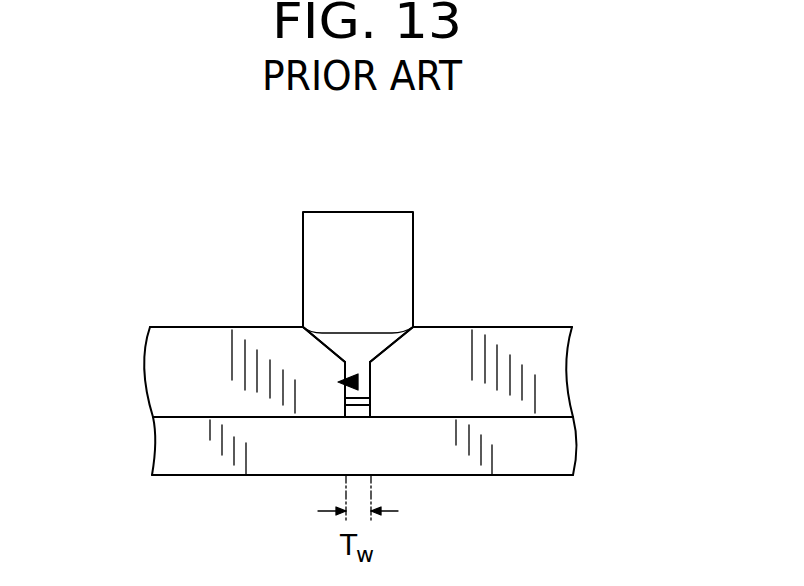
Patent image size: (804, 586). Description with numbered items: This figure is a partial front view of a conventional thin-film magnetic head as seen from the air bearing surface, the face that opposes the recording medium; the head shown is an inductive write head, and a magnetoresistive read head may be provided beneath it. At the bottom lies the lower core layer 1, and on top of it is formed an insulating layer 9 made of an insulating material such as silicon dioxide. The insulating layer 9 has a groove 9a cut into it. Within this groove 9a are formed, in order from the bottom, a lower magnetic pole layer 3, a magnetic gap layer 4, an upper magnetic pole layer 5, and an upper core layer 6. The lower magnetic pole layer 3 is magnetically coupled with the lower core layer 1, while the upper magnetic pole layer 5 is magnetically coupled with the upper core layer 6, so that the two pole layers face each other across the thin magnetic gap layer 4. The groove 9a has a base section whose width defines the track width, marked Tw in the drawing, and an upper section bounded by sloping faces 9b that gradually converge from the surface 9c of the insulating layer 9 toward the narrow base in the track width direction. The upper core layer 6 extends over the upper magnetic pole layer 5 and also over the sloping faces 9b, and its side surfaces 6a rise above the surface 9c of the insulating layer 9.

The lower core layer 1 is at (537, 450).
The lower magnetic pole layer 3 is at (370, 410).
The magnetic gap layer 4 is at (357, 395).
The upper magnetic pole layer 5 is at (357, 353).
The upper core layer 6 is at (322, 237).
The web plate side surface 6a is at (303, 227).
The insulating layer 9 is at (167, 375).
The groove 9a is at (327, 390).
The sloping faces 9b is at (313, 327).
The surface 9c is at (218, 326).